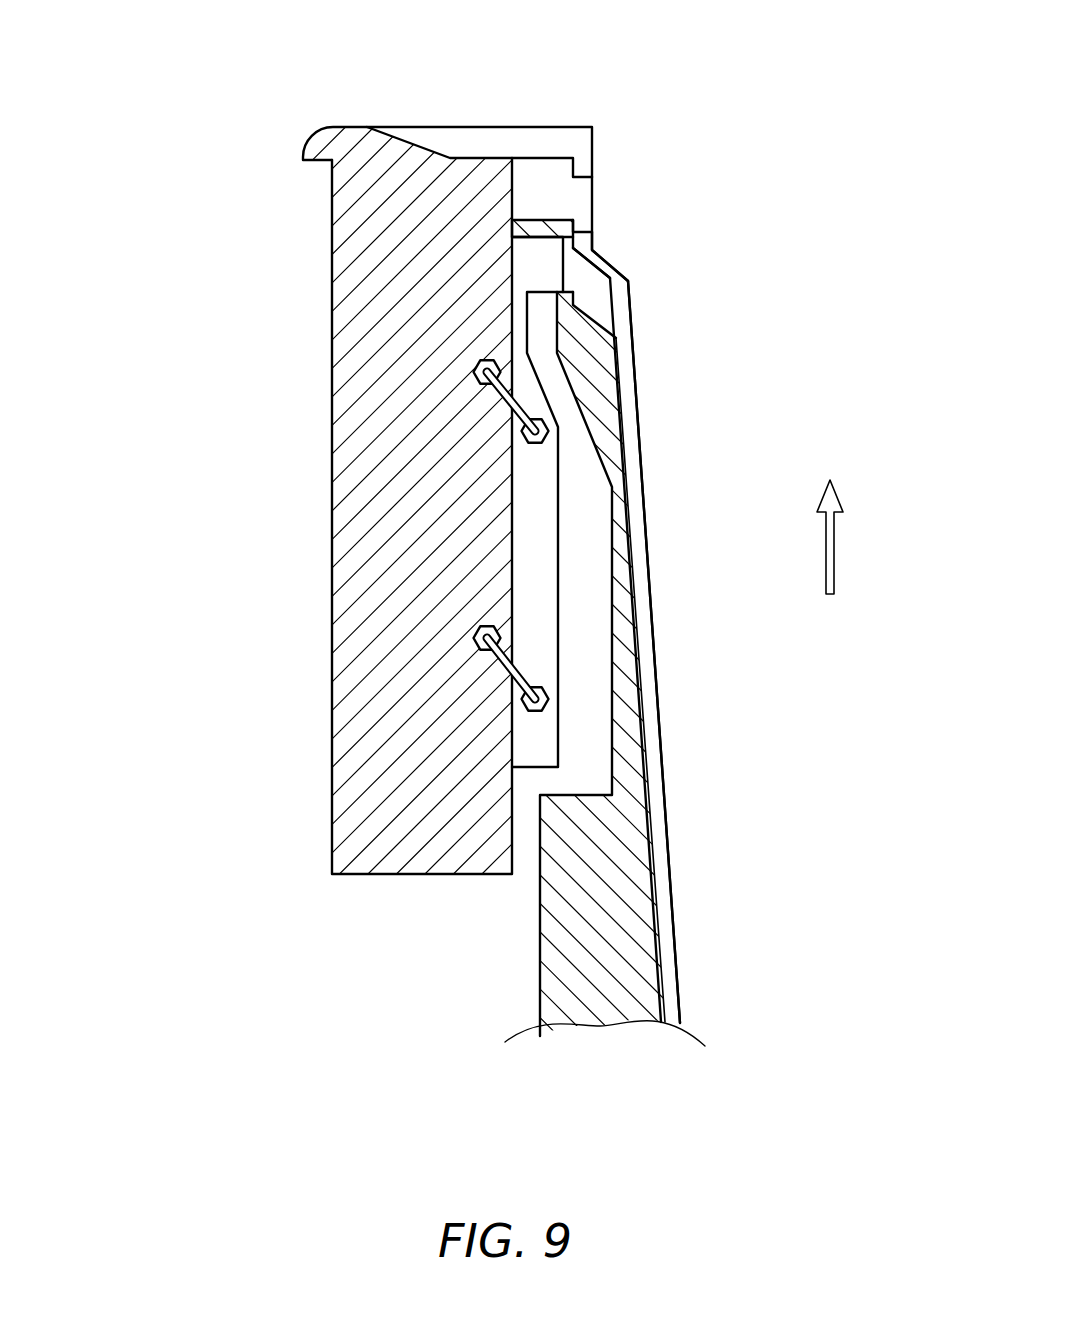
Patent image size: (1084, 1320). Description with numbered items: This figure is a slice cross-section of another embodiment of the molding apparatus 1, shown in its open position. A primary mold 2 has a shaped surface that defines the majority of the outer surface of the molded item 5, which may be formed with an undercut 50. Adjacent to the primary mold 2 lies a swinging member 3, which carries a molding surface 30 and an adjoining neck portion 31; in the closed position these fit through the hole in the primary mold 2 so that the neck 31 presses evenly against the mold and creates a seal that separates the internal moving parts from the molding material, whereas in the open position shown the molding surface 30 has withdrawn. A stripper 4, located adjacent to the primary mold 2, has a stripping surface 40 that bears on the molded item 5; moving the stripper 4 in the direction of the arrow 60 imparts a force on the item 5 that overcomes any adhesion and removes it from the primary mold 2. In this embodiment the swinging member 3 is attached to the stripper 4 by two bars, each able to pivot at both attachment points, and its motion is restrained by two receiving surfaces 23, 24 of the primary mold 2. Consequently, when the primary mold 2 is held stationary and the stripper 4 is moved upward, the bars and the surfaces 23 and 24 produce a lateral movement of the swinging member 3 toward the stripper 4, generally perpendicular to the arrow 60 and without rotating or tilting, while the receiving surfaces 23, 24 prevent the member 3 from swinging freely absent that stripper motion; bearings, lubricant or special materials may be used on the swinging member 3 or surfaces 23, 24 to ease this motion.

The molding apparatus 1 is at (238, 104).
The primary mold 2 is at (557, 270).
The swinging member 3 is at (533, 470).
The stripper 4 is at (360, 567).
The molded item 5 is at (620, 328).
The receiving surface 23 is at (600, 251).
The receiving surface 24 is at (572, 290).
The molding surface 30 is at (578, 268).
The neck portion 31 is at (535, 262).
The stripping surface 40 is at (410, 144).
The undercut 50 is at (592, 207).
The arrow 60 is at (850, 537).